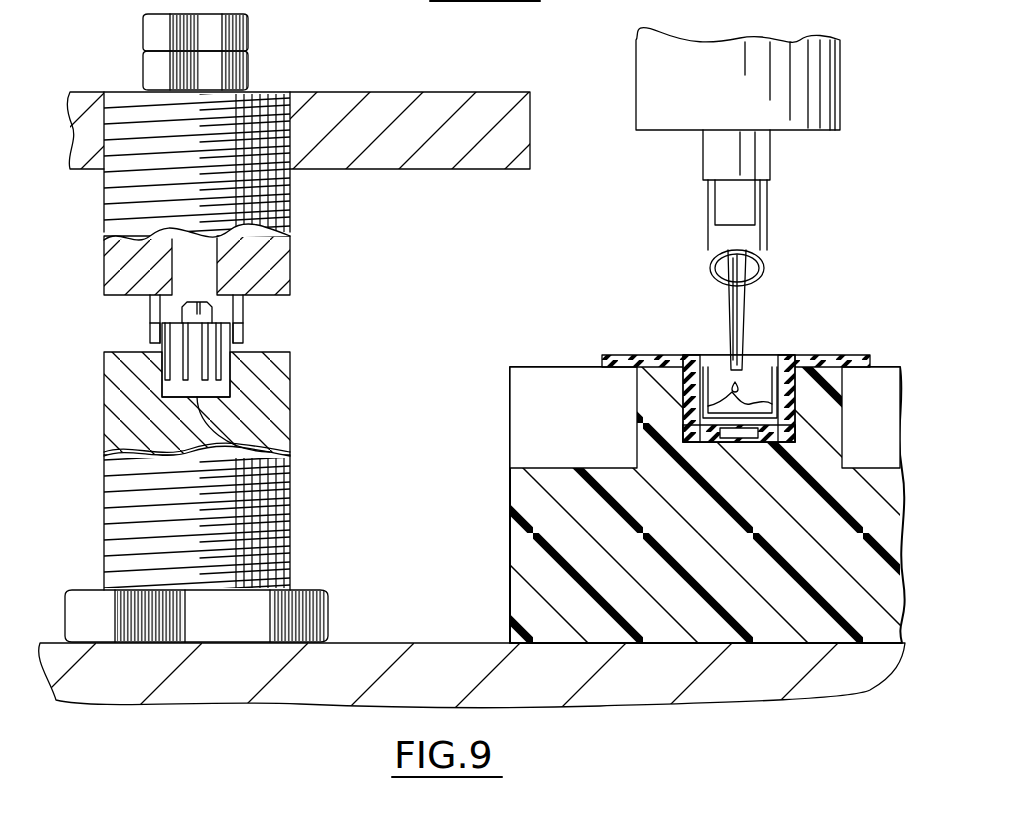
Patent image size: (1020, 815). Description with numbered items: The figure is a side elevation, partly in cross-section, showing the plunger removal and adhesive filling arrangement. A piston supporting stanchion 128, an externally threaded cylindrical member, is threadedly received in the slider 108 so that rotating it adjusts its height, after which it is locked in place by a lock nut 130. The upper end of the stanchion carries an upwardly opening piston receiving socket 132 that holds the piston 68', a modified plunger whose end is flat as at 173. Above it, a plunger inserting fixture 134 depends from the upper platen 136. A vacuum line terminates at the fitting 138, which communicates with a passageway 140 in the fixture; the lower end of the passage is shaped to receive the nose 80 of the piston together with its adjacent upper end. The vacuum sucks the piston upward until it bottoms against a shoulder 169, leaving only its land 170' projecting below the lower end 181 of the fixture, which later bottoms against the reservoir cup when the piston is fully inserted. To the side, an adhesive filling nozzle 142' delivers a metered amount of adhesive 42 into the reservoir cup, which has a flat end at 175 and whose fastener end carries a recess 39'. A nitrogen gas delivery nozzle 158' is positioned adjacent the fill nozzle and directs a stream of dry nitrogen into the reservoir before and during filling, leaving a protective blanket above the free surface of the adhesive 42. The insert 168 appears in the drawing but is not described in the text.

The fitting 138 is at (150, 65).
The plunger inserting fixture 134 is at (273, 186).
The upper platen 136 is at (446, 166).
The passageway 140 is at (162, 248).
The nose 80 is at (200, 302).
The insert 168 is at (190, 336).
The shoulder 169 is at (236, 316).
The lower end of the fixture 181 is at (152, 340).
The piston 68' is at (315, 351).
The piston receiving socket 132 is at (248, 378).
The land 170' is at (308, 421).
The flat end 173 is at (250, 452).
The piston supporting stanchion 128 is at (122, 537).
The lock nut 130 is at (306, 598).
The slider 108 is at (415, 643).
The nitrogen gas delivery nozzle 158' is at (761, 139).
The adhesive filling nozzle 142' is at (677, 310).
The adhesive 42 is at (748, 410).
The flat end 175 is at (690, 442).
The recess 39' is at (746, 442).